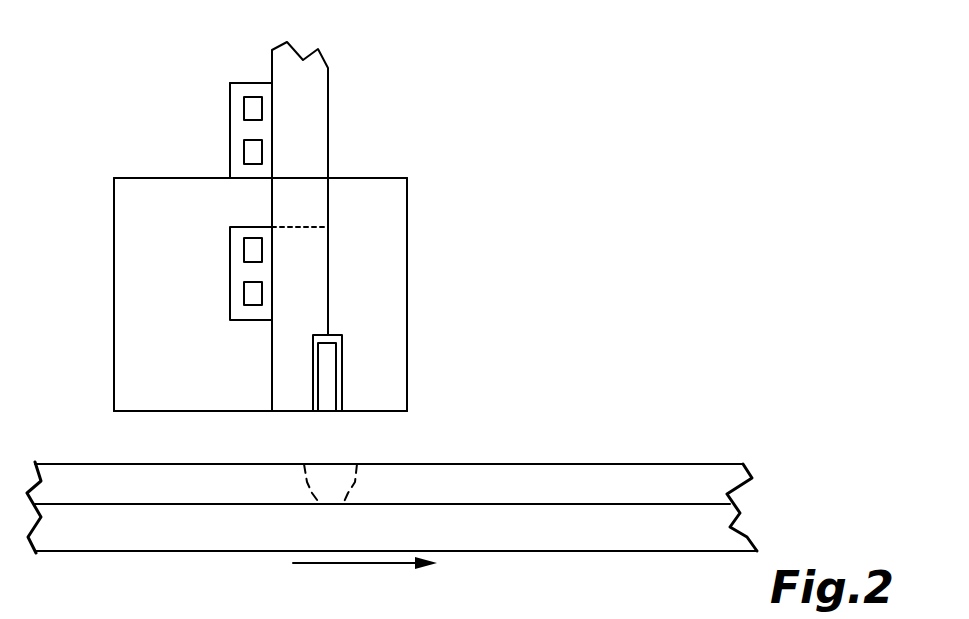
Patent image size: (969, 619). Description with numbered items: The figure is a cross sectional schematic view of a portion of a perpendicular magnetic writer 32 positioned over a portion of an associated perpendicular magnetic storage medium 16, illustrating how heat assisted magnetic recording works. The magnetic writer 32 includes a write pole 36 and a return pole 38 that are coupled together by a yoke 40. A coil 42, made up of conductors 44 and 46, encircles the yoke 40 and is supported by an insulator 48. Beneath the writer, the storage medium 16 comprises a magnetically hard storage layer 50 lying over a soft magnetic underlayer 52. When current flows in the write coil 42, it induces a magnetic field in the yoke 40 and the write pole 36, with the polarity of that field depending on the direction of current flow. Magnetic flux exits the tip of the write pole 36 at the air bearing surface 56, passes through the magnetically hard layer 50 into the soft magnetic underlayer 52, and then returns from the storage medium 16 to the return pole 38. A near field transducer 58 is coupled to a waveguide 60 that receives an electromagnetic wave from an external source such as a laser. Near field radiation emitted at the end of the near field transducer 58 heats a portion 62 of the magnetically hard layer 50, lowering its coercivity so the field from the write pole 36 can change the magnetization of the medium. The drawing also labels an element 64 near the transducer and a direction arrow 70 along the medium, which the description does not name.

The perpendicular magnetic storage medium 16 is at (748, 432).
The magnetic writer 32 is at (523, 122).
The write pole 36 is at (378, 233).
The return pole 38 is at (144, 332).
The yoke 40 is at (257, 203).
The coil 42 is at (218, 70).
The conductors 44 is at (255, 295).
The conductors 46 is at (247, 150).
The insulator 48 is at (237, 90).
The magnetically hard storage layer 50 is at (693, 490).
The soft magnetic underlayer 52 is at (687, 522).
The air bearing surface 56 is at (136, 412).
The near field transducer 58 is at (328, 395).
The waveguide 60 is at (290, 365).
The heated portion 62 is at (310, 491).
The sensor 64 is at (337, 350).
The direction of travel 70 is at (357, 565).